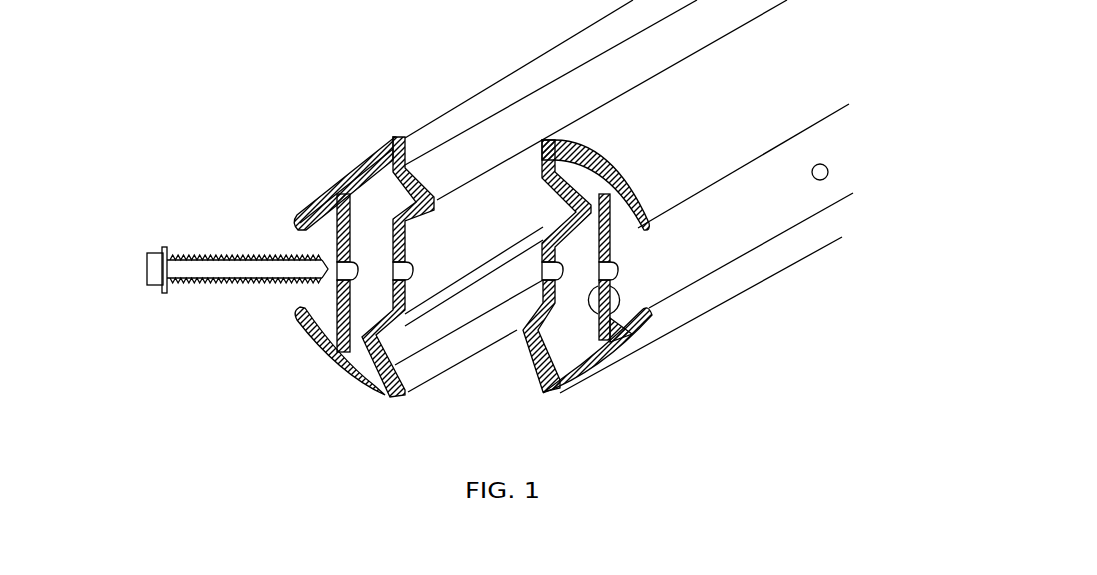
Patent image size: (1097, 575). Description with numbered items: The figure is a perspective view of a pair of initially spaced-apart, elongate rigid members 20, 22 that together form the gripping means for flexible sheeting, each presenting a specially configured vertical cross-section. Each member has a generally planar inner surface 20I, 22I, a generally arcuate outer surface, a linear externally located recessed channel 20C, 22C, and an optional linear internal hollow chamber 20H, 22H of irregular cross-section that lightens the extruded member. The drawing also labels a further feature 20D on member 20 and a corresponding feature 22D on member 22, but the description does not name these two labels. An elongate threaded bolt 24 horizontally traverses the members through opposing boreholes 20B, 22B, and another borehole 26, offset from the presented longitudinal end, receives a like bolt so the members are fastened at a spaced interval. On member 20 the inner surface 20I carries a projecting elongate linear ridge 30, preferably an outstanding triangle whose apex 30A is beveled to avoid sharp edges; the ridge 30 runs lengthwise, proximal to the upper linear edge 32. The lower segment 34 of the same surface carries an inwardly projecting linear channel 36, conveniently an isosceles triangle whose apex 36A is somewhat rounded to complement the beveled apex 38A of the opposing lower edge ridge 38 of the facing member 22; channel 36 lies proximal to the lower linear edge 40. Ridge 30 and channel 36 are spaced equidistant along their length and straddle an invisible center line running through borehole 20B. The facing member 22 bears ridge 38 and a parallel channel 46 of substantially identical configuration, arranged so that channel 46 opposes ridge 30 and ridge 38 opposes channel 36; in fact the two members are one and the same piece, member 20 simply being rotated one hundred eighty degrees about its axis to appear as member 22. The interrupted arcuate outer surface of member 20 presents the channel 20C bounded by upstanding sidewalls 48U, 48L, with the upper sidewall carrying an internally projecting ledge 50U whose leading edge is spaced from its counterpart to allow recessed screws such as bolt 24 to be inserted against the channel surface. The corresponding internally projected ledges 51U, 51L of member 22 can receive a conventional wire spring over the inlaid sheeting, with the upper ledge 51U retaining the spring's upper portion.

The elongate rigid member 20 is at (575, 19).
The borehole 20B is at (412, 264).
The recessed channel 20C is at (333, 245).
The clip upper flange 20D is at (330, 168).
The internal hollow chamber 20H is at (350, 372).
The inner surface 20I is at (407, 215).
The elongate rigid member 22 is at (792, 98).
The borehole 22B is at (614, 262).
The recessed channel 22C is at (796, 222).
The rail flange 22D is at (797, 247).
The internal hollow chamber 22H is at (609, 312).
The inner surface 22I is at (474, 276).
The threaded bolt 24 is at (181, 254).
The borehole 26 is at (828, 170).
The ridge 30 is at (392, 182).
The apex 30A is at (438, 194).
The upper linear edge 32 is at (548, 70).
The lower segment 34 is at (467, 340).
The channel 36 is at (428, 340).
The apex 36A is at (373, 352).
The ridge 38 is at (532, 333).
The apex 38A is at (515, 335).
The lower linear edge 40 is at (412, 393).
The channel 46 is at (607, 178).
The lower sidewall 48L is at (305, 311).
The upper sidewall 48U is at (332, 170).
The upper ledge 50U is at (299, 222).
The lower ledge 51L is at (652, 312).
The upper ledge 51U is at (650, 228).